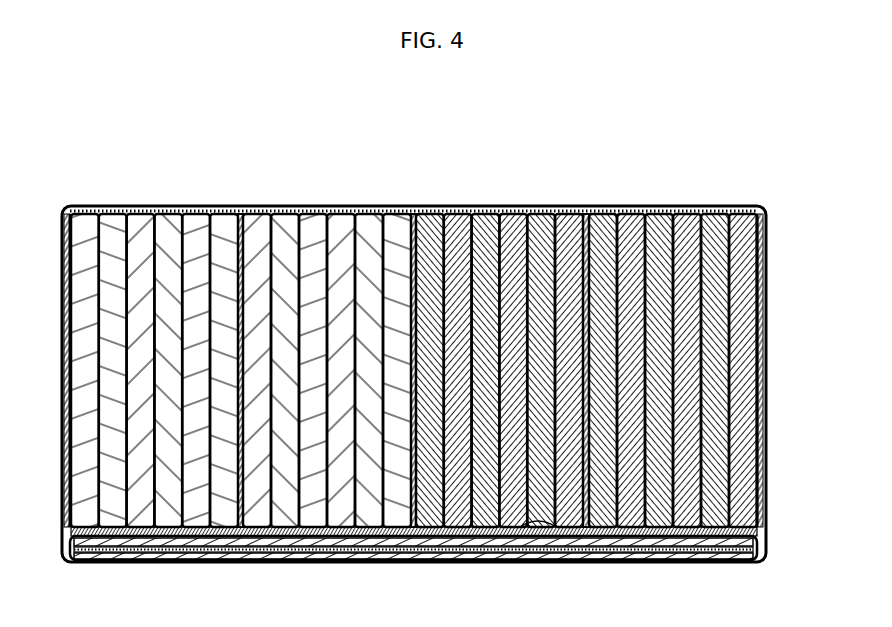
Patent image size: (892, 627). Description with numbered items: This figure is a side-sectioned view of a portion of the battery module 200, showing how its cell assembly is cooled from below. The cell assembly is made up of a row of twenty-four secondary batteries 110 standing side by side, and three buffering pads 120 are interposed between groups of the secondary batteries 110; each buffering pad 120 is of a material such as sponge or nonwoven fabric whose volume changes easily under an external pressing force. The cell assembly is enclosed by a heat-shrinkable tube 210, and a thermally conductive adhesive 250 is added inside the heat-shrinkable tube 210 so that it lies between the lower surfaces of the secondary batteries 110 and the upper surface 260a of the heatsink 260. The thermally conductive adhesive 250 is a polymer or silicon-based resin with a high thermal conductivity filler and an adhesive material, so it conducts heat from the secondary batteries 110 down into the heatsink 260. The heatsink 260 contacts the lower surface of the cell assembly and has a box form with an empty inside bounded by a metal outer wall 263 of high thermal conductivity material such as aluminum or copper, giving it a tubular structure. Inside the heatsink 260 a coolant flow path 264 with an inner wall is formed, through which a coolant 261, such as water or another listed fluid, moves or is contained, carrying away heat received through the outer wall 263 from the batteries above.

The battery module 200 is at (190, 124).
The secondary batteries 110 is at (142, 243).
The buffering pad 120 is at (239, 268).
The heat-shrinkable tube 210 is at (641, 208).
The thermally conductive adhesive 250 is at (335, 531).
The heatsink 260 is at (439, 552).
The coolant 261 is at (105, 553).
The outer wall 263 is at (226, 540).
The coolant flow path 264 is at (421, 549).
The upper surface of the heatsink 260a is at (545, 540).